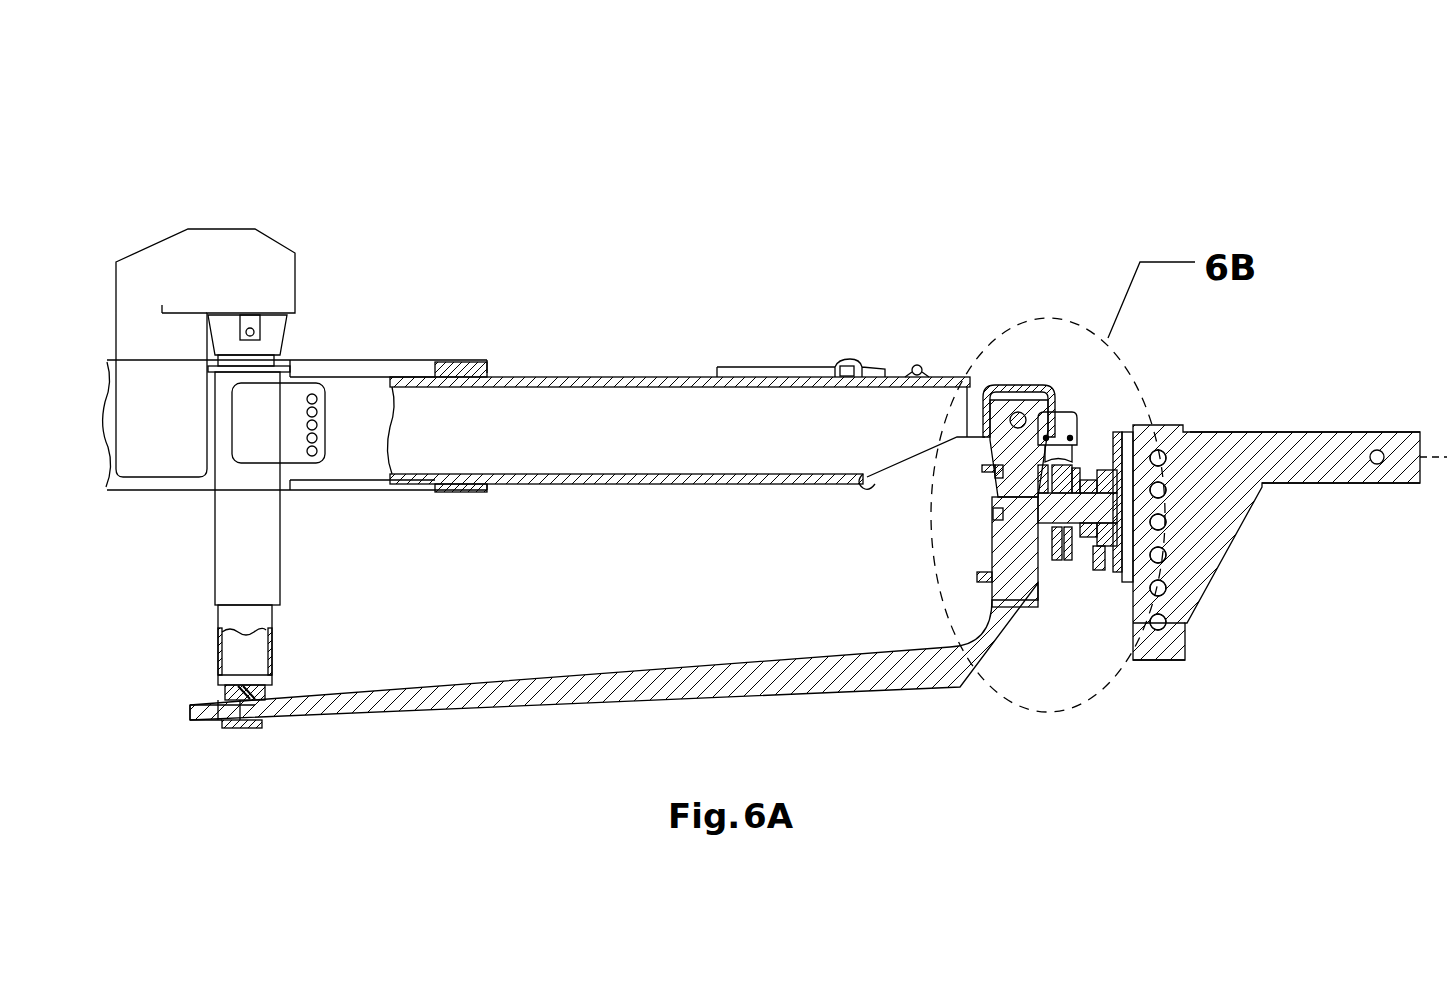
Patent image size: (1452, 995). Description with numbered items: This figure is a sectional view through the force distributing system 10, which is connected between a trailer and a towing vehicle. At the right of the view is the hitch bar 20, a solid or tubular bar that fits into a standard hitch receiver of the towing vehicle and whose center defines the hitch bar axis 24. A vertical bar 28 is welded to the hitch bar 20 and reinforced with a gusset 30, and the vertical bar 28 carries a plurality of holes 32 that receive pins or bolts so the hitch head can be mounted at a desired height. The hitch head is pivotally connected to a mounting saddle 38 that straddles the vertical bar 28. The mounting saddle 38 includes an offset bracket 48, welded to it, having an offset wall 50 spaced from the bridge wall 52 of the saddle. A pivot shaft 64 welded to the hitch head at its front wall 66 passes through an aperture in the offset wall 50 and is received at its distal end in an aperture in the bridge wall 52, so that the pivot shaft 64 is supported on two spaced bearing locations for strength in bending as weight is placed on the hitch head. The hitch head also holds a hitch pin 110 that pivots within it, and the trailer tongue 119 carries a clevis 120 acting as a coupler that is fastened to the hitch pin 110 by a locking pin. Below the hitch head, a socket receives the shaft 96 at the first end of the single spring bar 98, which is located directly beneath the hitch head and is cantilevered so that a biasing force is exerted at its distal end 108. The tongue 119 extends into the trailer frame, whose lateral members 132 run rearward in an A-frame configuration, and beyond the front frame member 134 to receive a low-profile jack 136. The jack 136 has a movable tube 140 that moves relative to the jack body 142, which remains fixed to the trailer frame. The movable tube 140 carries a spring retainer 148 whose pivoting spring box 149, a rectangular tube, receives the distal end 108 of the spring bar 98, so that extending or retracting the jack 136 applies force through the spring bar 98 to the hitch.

The force distributing system 10 is at (884, 250).
The hitch bar 20 is at (1290, 432).
The hitch bar axis 24 is at (1447, 457).
The vertical bar 28 is at (1190, 645).
The gusset 30 is at (1243, 500).
The holes 32 is at (1190, 445).
The mounting saddle 38 is at (1125, 432).
The offset bracket 48 is at (1093, 567).
The offset wall 50 is at (1092, 462).
The bridge wall 52 is at (1115, 573).
The pivot shaft 64 is at (1098, 455).
The front wall 66 is at (1062, 577).
The shaft 96 is at (992, 605).
The spring bar 98 is at (968, 692).
The distal end 108 is at (197, 730).
The hitch pin 110 is at (990, 488).
The tongue 119 is at (600, 376).
The clevis 120 is at (995, 385).
The lateral members 132 is at (368, 362).
The front frame member 134 is at (455, 362).
The jack 136 is at (194, 184).
The movable tube 140 is at (272, 648).
The jack body 142 is at (280, 533).
The spring retainer 148 is at (204, 666).
The spring box 149 is at (245, 730).